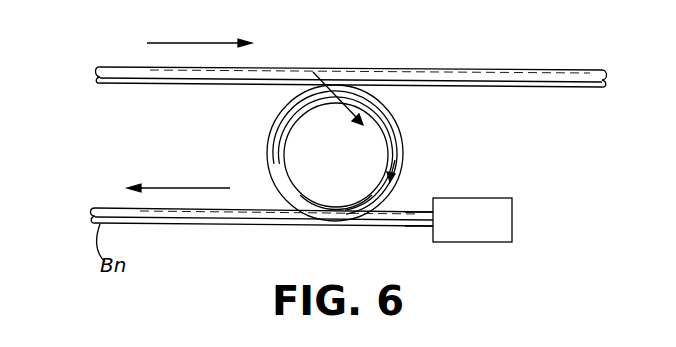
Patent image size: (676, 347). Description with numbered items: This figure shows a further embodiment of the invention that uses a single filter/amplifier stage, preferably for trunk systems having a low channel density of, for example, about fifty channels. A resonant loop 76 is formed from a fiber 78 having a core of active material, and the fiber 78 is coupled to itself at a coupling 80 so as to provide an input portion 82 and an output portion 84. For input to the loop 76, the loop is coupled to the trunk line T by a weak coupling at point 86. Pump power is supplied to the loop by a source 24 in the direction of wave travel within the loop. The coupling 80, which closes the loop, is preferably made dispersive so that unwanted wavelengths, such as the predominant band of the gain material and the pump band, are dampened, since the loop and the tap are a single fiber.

The trunk line T is at (110, 66).
The source 24 is at (508, 198).
The resonant loop 76 is at (412, 122).
The fiber 78 is at (266, 141).
The coupling 80 is at (333, 208).
The input portion 82 is at (421, 223).
The output portion 84 is at (193, 223).
The point 86 is at (342, 86).